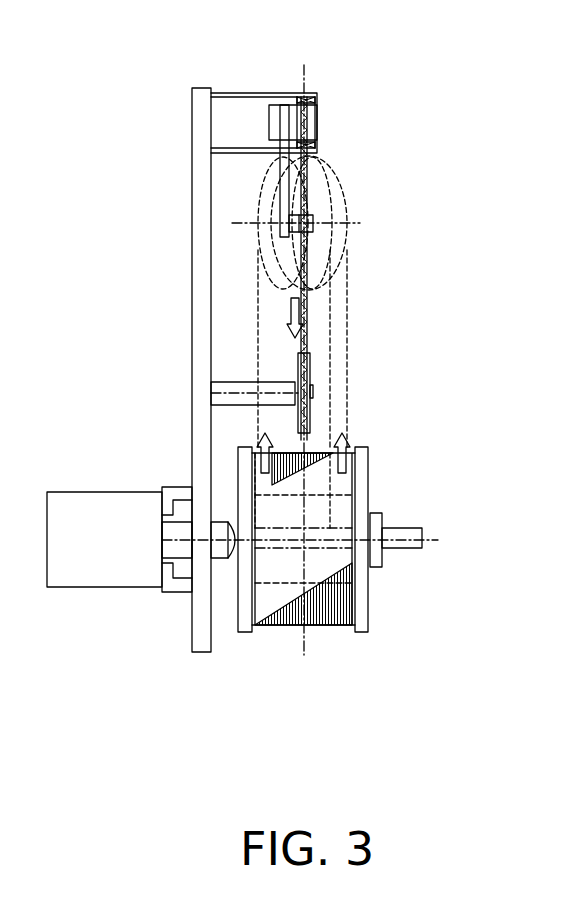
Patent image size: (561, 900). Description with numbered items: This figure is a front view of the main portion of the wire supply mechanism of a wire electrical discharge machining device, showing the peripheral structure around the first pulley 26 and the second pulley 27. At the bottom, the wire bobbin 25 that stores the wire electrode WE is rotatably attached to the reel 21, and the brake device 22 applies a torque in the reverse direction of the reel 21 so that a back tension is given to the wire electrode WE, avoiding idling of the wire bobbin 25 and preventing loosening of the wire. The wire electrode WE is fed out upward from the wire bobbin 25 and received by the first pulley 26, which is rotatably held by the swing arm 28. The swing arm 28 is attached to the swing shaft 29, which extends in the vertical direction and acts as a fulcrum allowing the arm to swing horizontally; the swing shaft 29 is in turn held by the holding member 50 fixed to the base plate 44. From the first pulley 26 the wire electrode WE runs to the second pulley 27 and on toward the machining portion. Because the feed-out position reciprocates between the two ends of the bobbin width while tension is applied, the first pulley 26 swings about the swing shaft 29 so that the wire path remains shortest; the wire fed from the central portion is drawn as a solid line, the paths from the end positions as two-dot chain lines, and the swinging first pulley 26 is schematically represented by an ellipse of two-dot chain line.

The holding member 50 is at (233, 93).
The swing shaft 29 is at (317, 123).
The swing arm 28 is at (317, 152).
The first pulley 26 is at (313, 213).
The second pulley 27 is at (313, 380).
The base plate 44 is at (192, 199).
The wire bobbin 25 is at (369, 462).
The reel 21 is at (402, 548).
The brake device 22 is at (97, 578).
The wire electrode WE is at (308, 443).